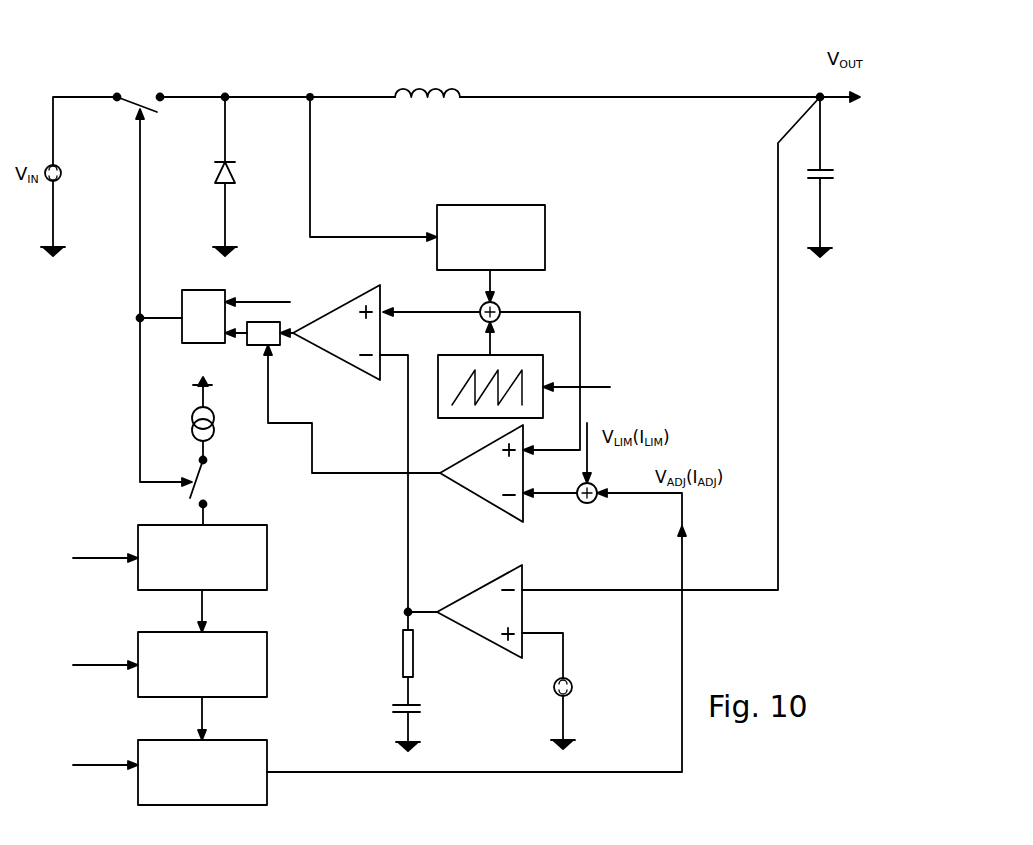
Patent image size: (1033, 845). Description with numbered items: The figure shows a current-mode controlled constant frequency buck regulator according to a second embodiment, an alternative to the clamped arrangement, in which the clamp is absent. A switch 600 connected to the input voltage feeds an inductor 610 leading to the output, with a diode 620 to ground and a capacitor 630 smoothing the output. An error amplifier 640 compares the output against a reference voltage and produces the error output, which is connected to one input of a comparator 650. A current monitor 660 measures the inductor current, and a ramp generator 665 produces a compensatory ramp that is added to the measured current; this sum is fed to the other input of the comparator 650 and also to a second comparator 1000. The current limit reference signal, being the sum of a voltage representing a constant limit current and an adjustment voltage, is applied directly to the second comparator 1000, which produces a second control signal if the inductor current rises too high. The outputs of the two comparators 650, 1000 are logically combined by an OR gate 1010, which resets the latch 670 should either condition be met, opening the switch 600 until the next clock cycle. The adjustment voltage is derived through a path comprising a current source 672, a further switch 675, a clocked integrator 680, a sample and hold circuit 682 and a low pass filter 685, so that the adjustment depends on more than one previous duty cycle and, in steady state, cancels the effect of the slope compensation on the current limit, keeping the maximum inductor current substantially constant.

The switch 600 is at (147, 87).
The inductor 610 is at (427, 82).
The diode 620 is at (242, 175).
The capacitor 630 is at (813, 182).
The error amplifier 640 is at (488, 615).
The comparator 650 is at (478, 468).
The current monitor 660 is at (530, 217).
The ramp generator 665 is at (543, 368).
The latch 670 is at (198, 312).
The current source 672 is at (210, 440).
The further switch 675 is at (182, 467).
The integrator 680 is at (252, 547).
The sample and hold circuit 682 is at (252, 672).
The low pass filter 685 is at (163, 788).
The second comparator 1000 is at (340, 335).
The OR gate 1010 is at (260, 348).